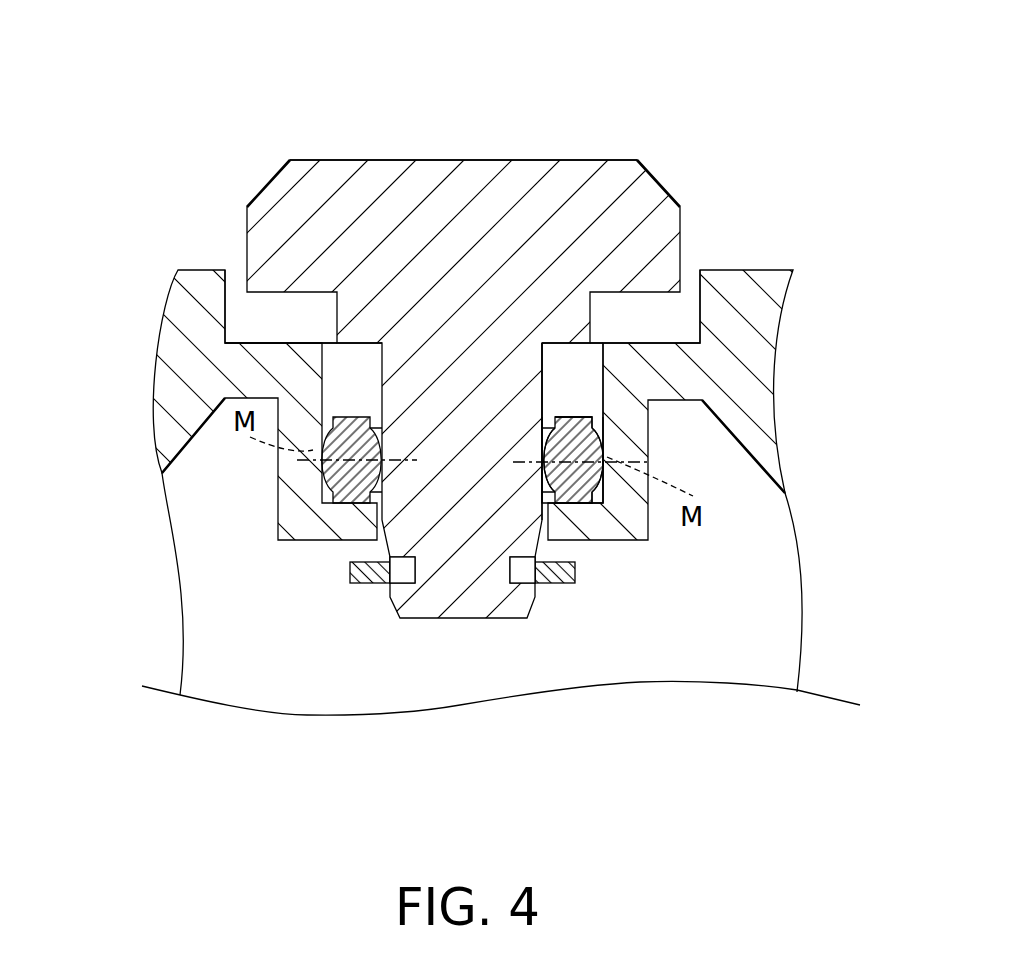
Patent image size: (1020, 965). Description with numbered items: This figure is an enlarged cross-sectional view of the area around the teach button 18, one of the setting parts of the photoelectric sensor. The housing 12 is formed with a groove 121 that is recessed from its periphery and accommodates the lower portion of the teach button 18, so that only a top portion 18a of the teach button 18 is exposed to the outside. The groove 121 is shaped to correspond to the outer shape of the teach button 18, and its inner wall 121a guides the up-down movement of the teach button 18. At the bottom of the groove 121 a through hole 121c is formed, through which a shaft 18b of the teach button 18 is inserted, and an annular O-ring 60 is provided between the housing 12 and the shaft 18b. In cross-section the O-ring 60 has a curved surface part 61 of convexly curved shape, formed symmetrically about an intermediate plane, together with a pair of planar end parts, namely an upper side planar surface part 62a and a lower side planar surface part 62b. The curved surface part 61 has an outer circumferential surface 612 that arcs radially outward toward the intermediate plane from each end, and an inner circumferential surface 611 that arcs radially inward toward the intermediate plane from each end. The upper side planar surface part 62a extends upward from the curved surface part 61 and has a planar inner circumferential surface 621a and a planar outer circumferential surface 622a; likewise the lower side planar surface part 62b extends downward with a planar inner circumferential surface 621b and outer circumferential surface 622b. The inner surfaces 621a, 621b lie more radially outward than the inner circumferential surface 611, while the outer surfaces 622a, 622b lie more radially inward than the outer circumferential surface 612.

The housing 12 is at (510, 477).
The groove 121 is at (276, 308).
The inner wall 121a is at (252, 343).
The through hole 121c is at (398, 553).
The teach button 18 is at (510, 325).
The top portion 18a is at (352, 243).
The shaft 18b is at (542, 416).
The O-ring 60 is at (592, 454).
The curved surface part 61 is at (651, 553).
The inner circumferential surface 611 is at (543, 462).
The outer circumferential surface 612 is at (608, 452).
The upper side planar surface part 62a is at (604, 424).
The lower side planar surface part 62b is at (578, 508).
The inner circumferential surface 621a is at (573, 407).
The inner circumferential surface 621b is at (550, 500).
The outer circumferential surface 622a is at (582, 450).
The outer circumferential surface 622b is at (595, 502).